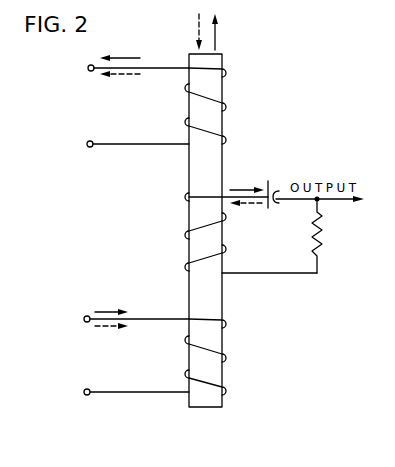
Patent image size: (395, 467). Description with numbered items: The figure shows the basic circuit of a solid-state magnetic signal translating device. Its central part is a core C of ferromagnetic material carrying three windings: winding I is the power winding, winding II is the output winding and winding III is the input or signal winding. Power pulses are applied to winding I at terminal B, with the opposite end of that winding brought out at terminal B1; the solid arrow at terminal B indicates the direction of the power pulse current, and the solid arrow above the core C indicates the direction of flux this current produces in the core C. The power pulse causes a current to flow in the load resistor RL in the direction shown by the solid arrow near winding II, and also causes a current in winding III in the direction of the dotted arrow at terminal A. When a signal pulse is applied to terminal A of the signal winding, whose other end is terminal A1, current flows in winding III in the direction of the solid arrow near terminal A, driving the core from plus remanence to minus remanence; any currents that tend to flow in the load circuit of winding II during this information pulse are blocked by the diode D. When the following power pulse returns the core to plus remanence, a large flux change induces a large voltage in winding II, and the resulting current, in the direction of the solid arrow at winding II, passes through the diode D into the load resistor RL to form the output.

The terminal B is at (129, 68).
The input terminal B' B1 is at (83, 135).
The terminal A is at (127, 319).
The input terminal A' A1 is at (79, 382).
The core C is at (222, 55).
The power winding I is at (185, 90).
The output winding II is at (183, 237).
The input winding III is at (183, 342).
The diode D is at (274, 186).
The load resistor RL is at (327, 236).